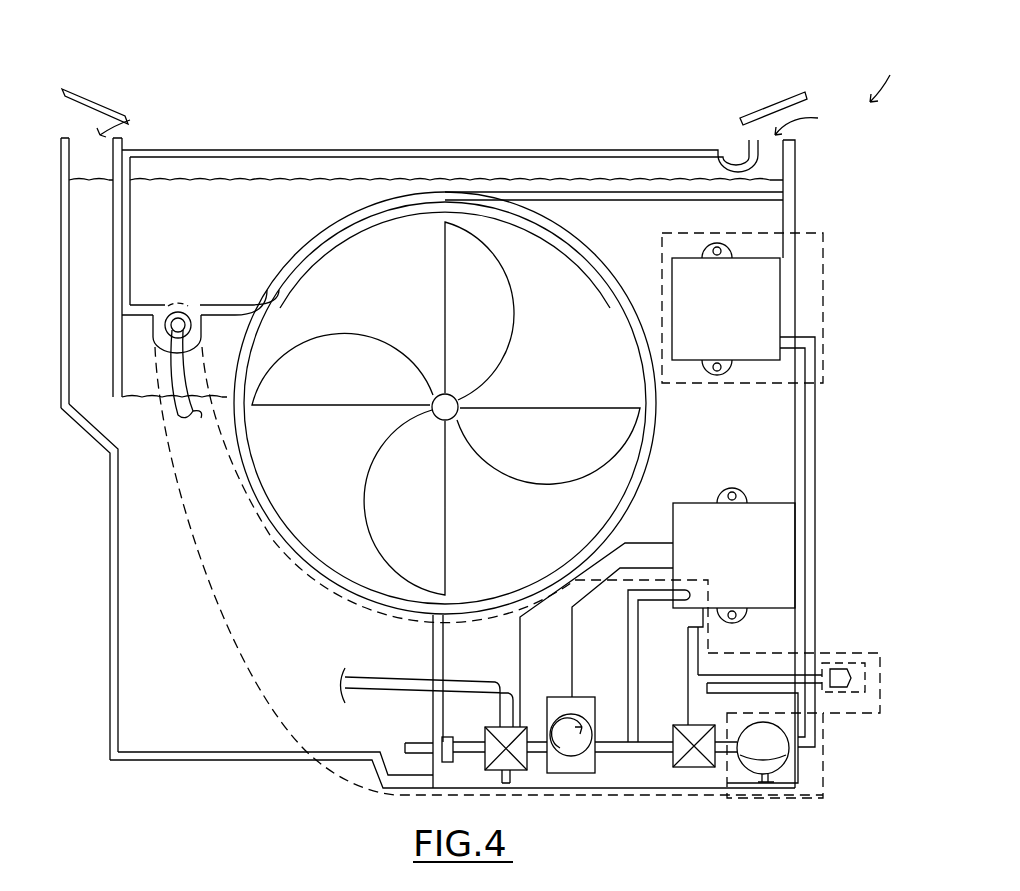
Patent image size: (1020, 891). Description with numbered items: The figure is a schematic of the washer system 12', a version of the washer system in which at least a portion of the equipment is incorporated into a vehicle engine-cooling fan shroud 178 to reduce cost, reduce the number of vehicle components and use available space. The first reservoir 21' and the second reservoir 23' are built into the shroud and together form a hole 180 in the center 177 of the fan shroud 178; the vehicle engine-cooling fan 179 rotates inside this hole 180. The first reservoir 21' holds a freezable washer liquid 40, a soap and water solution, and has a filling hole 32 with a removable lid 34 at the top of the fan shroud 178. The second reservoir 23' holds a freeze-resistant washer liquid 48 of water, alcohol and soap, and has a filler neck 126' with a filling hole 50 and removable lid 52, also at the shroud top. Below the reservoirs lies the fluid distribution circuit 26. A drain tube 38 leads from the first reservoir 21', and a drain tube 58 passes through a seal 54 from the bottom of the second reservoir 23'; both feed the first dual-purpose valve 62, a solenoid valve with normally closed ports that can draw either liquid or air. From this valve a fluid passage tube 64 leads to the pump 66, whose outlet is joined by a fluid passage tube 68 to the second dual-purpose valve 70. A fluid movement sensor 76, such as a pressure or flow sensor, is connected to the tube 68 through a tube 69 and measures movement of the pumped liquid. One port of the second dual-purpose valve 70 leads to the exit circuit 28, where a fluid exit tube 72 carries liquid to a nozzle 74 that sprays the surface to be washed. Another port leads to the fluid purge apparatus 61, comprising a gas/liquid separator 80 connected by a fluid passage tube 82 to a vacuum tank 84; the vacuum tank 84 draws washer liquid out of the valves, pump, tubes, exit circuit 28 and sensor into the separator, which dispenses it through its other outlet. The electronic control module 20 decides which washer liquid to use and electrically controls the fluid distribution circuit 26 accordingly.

The washer system 12' is at (883, 75).
The electronic control module 20 is at (698, 500).
The first reservoir 21' is at (440, 204).
The second reservoir 23' is at (89, 582).
The fluid distribution circuit 26 is at (880, 708).
The exit circuit 28 is at (868, 672).
The filling hole 32 is at (810, 121).
The removable lid 34 is at (778, 100).
The drain tube 38 is at (177, 372).
The freezable washer liquid 40 is at (410, 185).
The freeze-resistant washer liquid 48 is at (128, 678).
The filling hole 50 is at (128, 125).
The removable lid 52 is at (100, 100).
The seal 54 is at (445, 738).
The drain tube 58 is at (463, 745).
The fluid purge apparatus 61 is at (822, 289).
The first dual-purpose valve 62 is at (483, 760).
The fluid passage tube 64 is at (535, 737).
The pump 66 is at (572, 777).
The fluid passage tube 68 is at (633, 783).
The tube 69 is at (632, 627).
The second dual-purpose valve 70 is at (695, 767).
The fluid exit tube 72 is at (822, 673).
The nozzle 74 is at (840, 672).
The fluid movement sensor 76 is at (690, 608).
The gas/liquid separator 80 is at (783, 760).
The fluid passage tube 82 is at (812, 348).
The vacuum tank 84 is at (782, 272).
The filler neck 126' is at (130, 273).
The center 177 is at (446, 408).
The vehicle engine-cooling fan shroud 178 is at (795, 207).
The vehicle engine-cooling fan 179 is at (548, 408).
The hole 180 is at (550, 254).